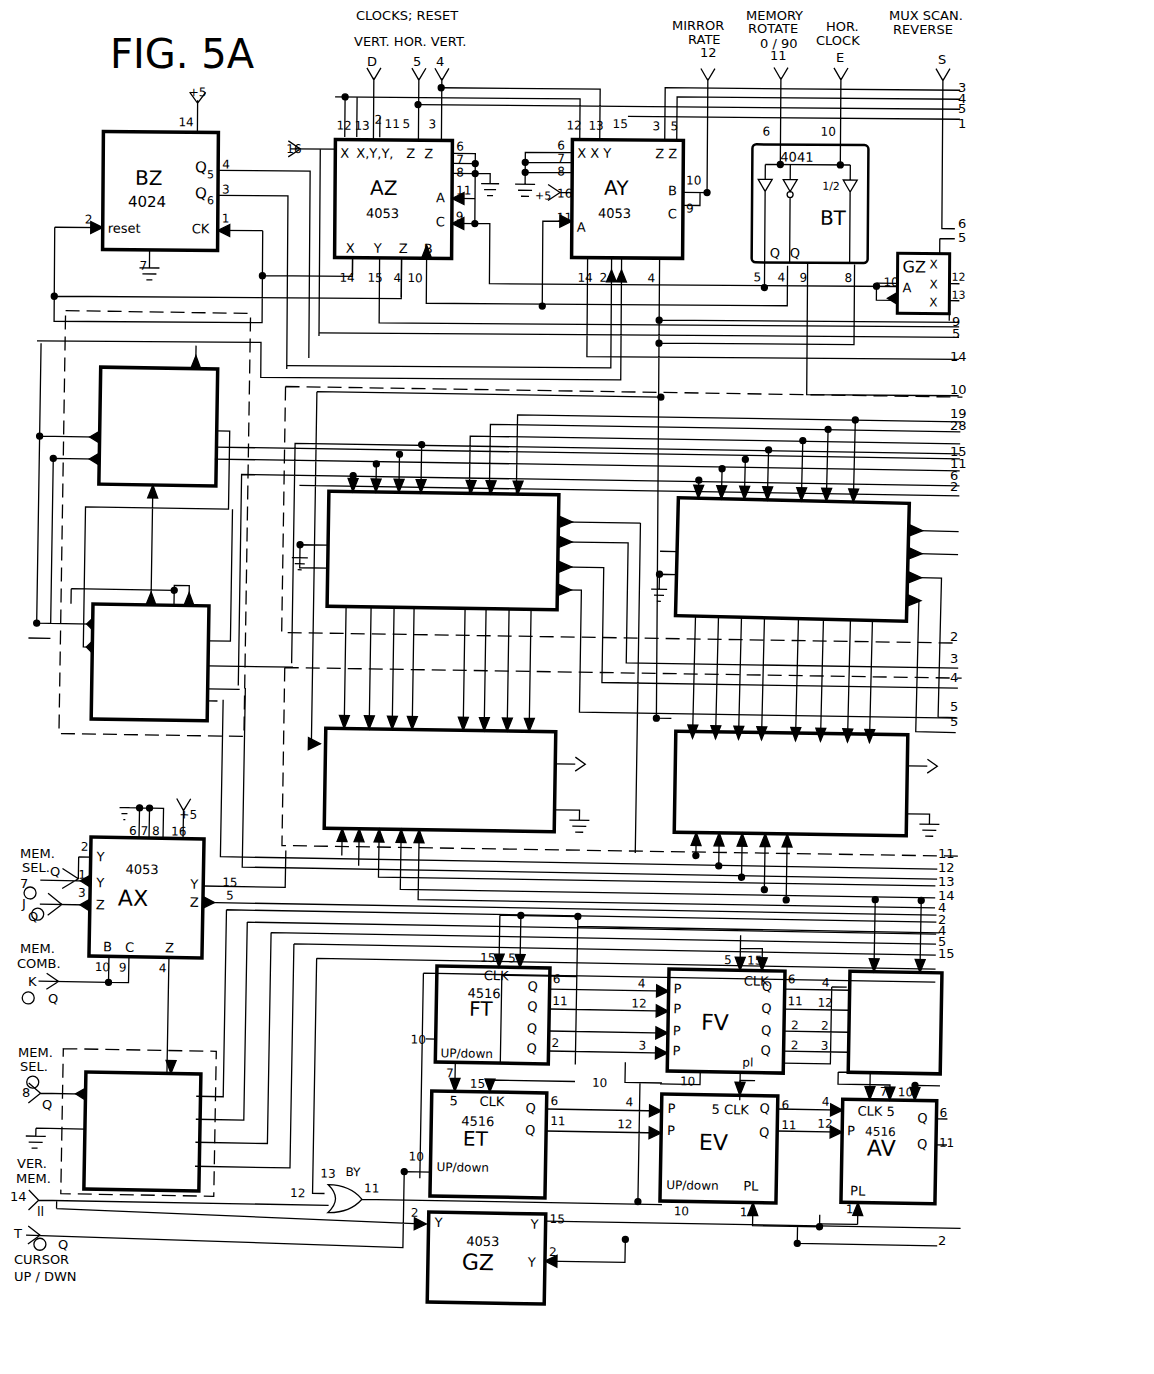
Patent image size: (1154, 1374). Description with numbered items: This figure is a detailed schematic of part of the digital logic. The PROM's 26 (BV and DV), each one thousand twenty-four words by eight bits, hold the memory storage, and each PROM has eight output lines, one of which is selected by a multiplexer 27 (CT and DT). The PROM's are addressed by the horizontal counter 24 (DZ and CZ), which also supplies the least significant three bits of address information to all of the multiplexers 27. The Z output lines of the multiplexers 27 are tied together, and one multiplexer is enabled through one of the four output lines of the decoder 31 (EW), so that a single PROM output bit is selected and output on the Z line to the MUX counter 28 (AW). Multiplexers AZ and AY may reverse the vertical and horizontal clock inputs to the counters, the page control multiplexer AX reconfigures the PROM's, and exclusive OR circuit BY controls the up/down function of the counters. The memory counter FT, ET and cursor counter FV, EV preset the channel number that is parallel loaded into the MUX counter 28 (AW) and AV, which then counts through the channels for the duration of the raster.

The horizontal counter 24 is at (149, 536).
The PROM's 26 is at (283, 428).
The multiplexers 27 is at (283, 666).
The MUX counter 28 is at (850, 986).
The decoder 31 is at (97, 1050).